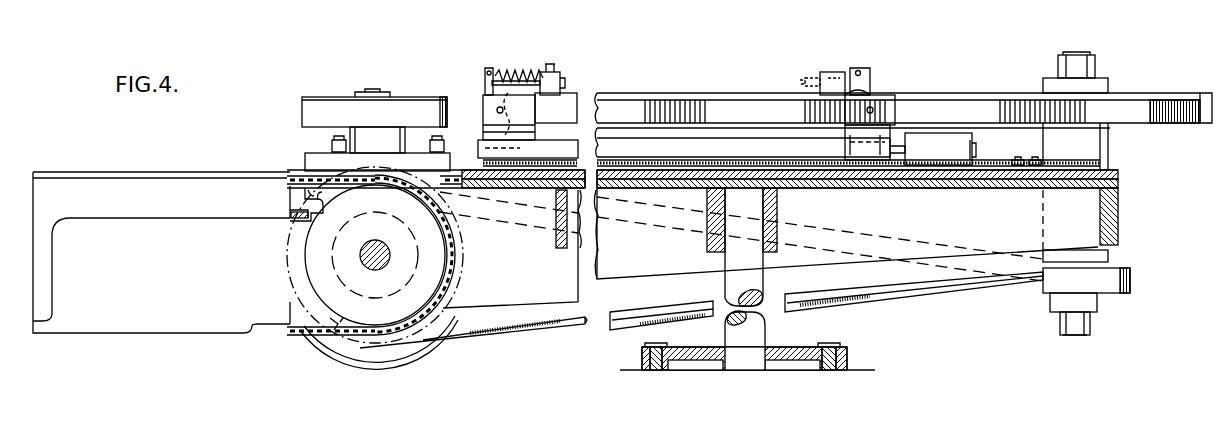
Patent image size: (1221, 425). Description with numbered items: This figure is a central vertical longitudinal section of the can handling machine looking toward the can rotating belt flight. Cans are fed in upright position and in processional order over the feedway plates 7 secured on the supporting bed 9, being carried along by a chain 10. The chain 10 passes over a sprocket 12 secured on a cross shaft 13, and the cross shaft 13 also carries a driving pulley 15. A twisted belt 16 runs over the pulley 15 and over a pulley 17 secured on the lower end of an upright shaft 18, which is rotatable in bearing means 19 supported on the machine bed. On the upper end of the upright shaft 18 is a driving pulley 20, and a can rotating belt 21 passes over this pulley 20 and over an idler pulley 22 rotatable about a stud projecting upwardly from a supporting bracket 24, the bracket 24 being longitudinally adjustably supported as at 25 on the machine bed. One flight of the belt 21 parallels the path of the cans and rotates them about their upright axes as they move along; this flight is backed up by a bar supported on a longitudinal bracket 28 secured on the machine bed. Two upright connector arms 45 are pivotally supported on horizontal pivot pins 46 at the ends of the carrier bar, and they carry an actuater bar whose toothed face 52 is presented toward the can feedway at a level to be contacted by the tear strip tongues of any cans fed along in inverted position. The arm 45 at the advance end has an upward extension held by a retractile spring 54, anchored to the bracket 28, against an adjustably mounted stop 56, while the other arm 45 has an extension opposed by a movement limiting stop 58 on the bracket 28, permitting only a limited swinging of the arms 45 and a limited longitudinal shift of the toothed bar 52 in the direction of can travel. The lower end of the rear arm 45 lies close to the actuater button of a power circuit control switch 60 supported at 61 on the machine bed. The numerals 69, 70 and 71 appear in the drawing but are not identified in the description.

The feedway plates 7 is at (138, 172).
The supporting bed 9 is at (990, 188).
The chain 10 is at (288, 200).
The sprocket 12 is at (340, 328).
The cross shaft 13 is at (360, 255).
The driving pulley 15 is at (408, 340).
The twisted belt 16 is at (530, 330).
The pulley 17 is at (1050, 278).
The upright shaft 18 is at (1085, 57).
The bearing means 19 is at (1085, 150).
The driving pulley 20 is at (1157, 95).
The can rotating belt 21 is at (407, 112).
The idler pulley 22 is at (322, 97).
The supporting bracket 24 is at (305, 160).
The adjustable support 25 is at (334, 143).
The longitudinal bracket 28 is at (748, 95).
The upright connector arms 45 is at (490, 68).
The horizontal pivot pins 46 is at (497, 108).
The toothed face 52 is at (545, 178).
The retractile spring 54 is at (560, 80).
The stop 56 is at (522, 74).
The movement limiting stop 58 is at (843, 74).
The power circuit control switch 60 is at (935, 140).
The switch support 61 is at (936, 188).
The base 69 is at (692, 420).
The pivot shaft 70 is at (746, 306).
The base plate 71 is at (780, 384).